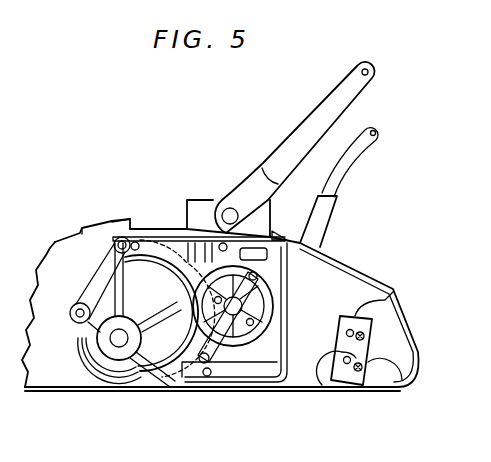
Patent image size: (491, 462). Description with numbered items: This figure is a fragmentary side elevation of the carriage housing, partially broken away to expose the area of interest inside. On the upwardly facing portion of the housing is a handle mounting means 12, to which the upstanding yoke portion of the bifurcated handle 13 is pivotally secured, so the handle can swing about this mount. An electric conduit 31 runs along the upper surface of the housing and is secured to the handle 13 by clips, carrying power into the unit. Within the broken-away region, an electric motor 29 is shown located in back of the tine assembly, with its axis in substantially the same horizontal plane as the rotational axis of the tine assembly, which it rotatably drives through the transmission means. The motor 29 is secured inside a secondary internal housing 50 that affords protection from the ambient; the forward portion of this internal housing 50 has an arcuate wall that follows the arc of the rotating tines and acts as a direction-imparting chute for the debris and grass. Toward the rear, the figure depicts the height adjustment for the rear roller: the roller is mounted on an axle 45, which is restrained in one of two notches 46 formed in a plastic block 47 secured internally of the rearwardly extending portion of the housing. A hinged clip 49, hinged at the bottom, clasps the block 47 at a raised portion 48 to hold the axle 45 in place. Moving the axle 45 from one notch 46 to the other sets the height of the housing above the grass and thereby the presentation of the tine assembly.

The handle mounting means 12 is at (198, 208).
The bifurcated handle 13 is at (315, 118).
The electric motor 29 is at (287, 285).
The electric conduit 31 is at (357, 150).
The axle 45 is at (382, 334).
The notches 46 is at (365, 387).
The plastic block 47 is at (326, 380).
The raised portion 48 is at (387, 289).
The hinged clip 49 is at (397, 387).
The secondary internal housing 50 is at (283, 340).